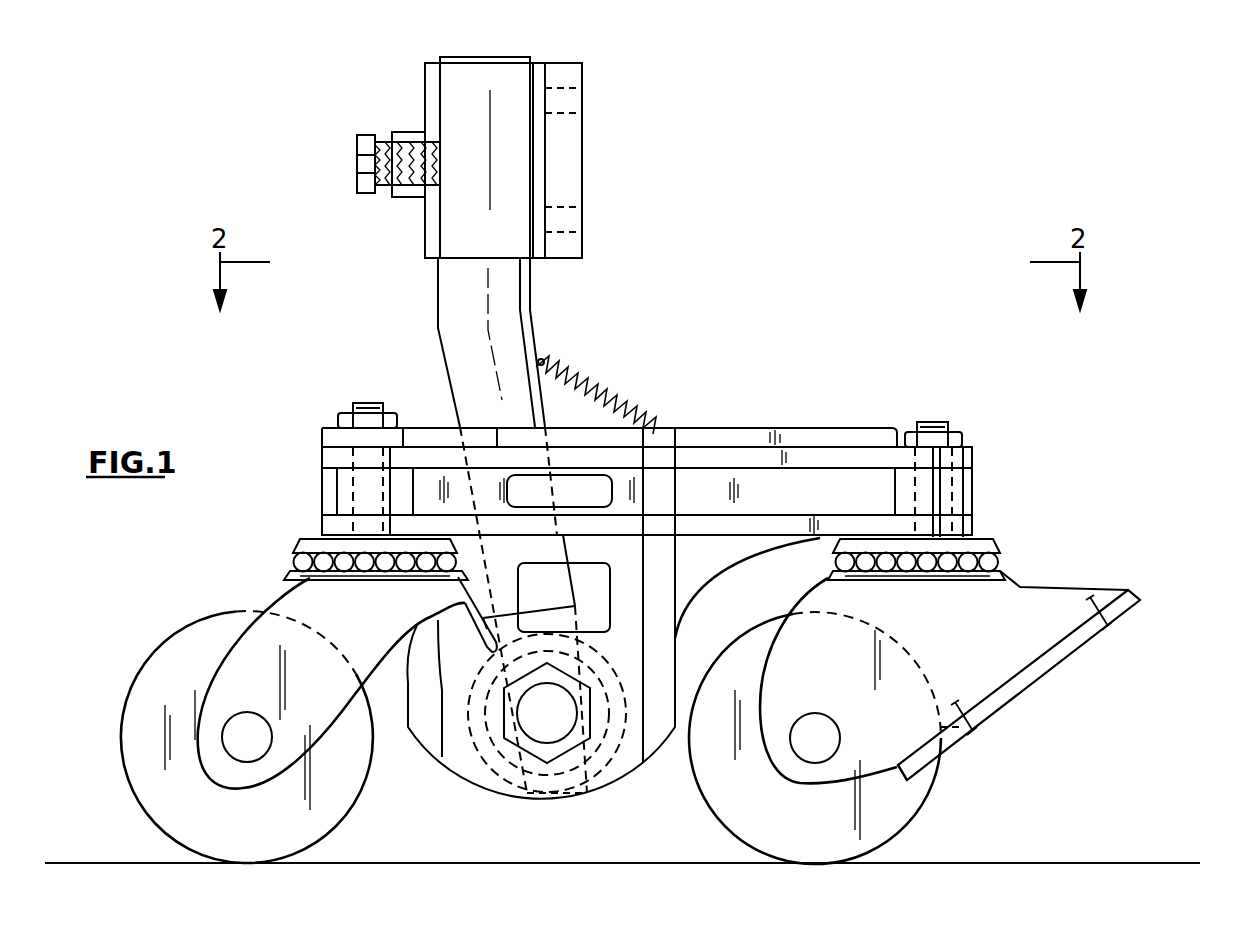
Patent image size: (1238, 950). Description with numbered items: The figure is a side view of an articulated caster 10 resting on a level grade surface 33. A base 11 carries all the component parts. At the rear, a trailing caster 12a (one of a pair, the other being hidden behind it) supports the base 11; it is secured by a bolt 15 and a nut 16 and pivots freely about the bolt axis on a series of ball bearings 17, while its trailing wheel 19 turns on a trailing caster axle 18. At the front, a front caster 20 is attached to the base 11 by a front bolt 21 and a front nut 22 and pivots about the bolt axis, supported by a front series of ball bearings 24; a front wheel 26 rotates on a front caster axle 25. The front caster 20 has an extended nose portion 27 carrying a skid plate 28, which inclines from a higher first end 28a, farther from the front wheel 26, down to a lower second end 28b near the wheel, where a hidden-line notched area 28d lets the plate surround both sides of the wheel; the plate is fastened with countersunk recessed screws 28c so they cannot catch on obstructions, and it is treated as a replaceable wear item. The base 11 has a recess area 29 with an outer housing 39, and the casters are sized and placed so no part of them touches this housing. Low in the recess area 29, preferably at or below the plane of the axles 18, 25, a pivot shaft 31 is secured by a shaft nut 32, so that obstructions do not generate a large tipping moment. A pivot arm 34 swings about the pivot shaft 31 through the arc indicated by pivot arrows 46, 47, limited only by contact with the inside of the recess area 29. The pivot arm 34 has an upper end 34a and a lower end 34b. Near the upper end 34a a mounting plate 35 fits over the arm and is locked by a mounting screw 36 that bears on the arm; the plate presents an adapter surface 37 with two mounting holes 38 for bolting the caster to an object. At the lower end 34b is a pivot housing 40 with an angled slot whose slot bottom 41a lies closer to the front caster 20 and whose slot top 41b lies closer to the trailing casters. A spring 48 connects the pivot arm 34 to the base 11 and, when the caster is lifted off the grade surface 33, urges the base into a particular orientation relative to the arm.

The articulated caster 10 is at (818, 184).
The base 11 is at (973, 497).
The trailing caster 12a is at (248, 601).
The bolt 15 is at (355, 405).
The nut 16 is at (340, 421).
The series of ball bearings 17 is at (295, 560).
The trailing caster axle 18 is at (228, 764).
The trailing wheel 19 is at (150, 668).
The front caster 20 is at (1010, 587).
The front bolt 21 is at (945, 424).
The front nut 22 is at (962, 440).
The front series of ball bearings 24 is at (1003, 553).
The front caster axle 25 is at (793, 760).
The front wheel 26 is at (915, 830).
The extended nose portion 27 is at (1053, 600).
The skid plate 28 is at (1033, 677).
The first end 28a is at (1148, 597).
The second end 28b is at (925, 775).
The recessed screws 28c is at (985, 728).
The notched area 28d is at (940, 727).
The recess area 29 is at (432, 414).
The pivot shaft 31 is at (557, 735).
The shaft nut 32 is at (592, 724).
The grade surface 33 is at (135, 862).
The pivot arm 34 is at (531, 282).
The upper end 34a is at (518, 57).
The lower end 34b is at (573, 590).
The mounting plate 35 is at (425, 80).
The mounting screw 36 is at (364, 195).
The adapter surface 37 is at (583, 163).
The mounting holes 38 is at (583, 218).
The outer housing 39 is at (445, 770).
The pivot housing 40 is at (485, 785).
The slot bottom 41a is at (541, 798).
The slot top 41b is at (556, 647).
The pivot arrow 46 is at (542, 333).
The pivot arrow 47 is at (397, 347).
The spring 48 is at (598, 370).